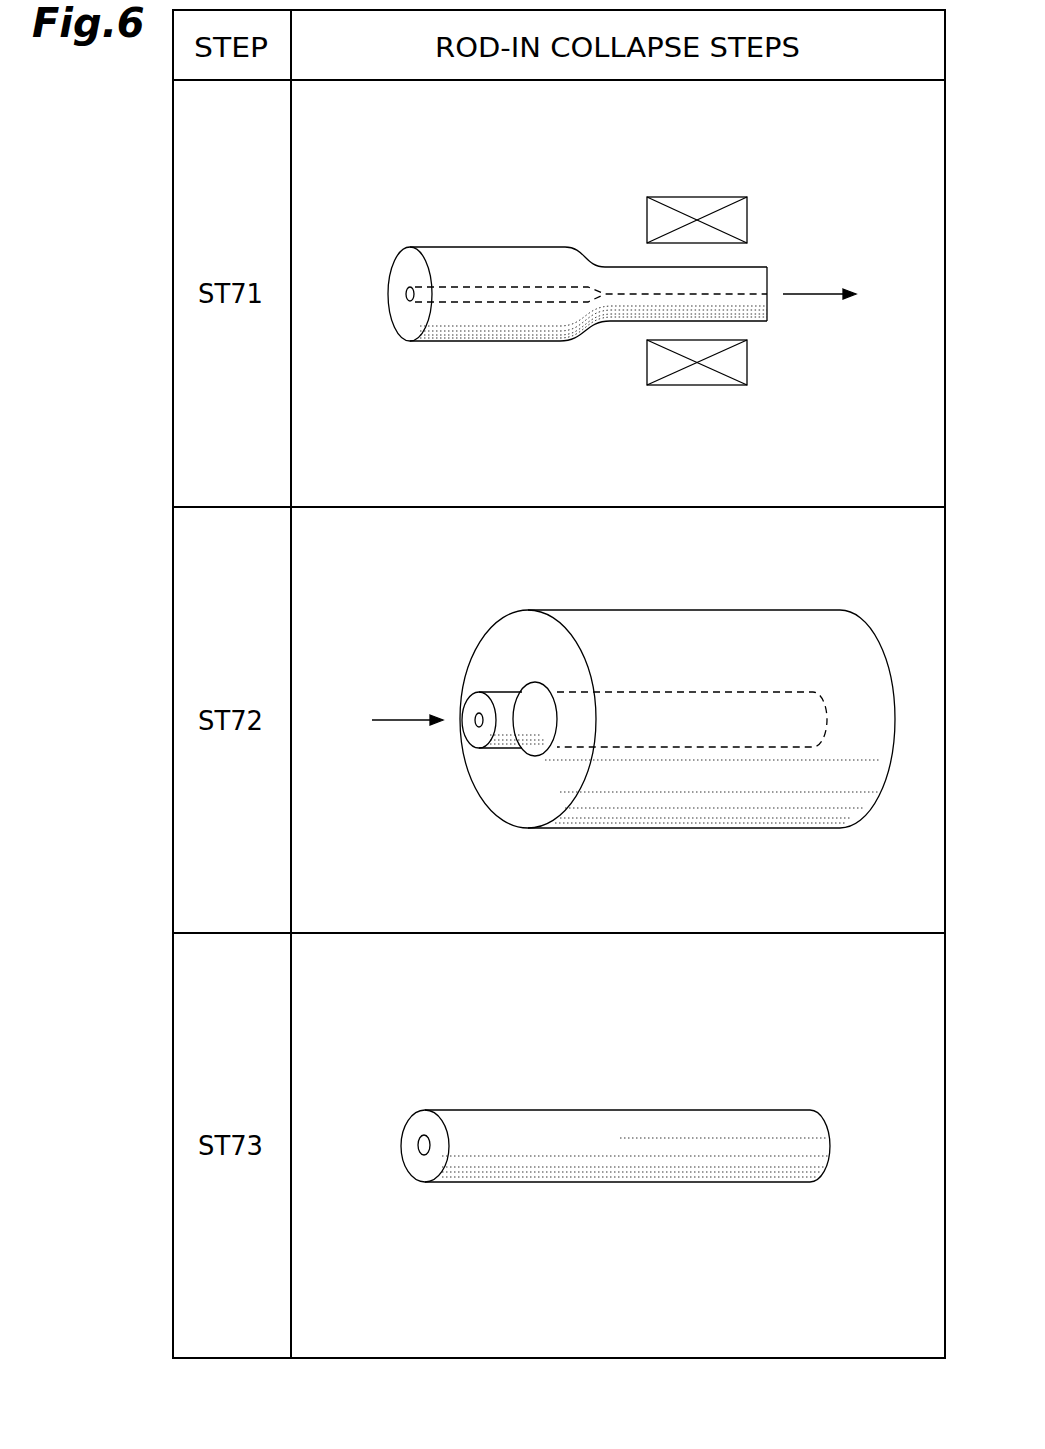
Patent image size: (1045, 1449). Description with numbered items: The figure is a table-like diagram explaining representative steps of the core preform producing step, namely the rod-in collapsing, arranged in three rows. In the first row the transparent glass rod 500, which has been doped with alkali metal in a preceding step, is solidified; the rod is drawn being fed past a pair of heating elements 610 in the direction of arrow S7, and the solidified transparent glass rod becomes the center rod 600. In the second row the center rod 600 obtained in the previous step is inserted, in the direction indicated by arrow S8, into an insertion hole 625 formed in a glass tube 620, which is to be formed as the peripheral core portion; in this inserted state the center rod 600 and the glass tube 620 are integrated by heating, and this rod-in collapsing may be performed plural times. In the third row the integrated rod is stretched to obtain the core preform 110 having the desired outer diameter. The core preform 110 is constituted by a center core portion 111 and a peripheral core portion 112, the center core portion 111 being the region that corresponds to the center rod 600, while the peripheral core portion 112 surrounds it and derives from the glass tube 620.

The transparent glass rod 500 is at (515, 247).
The center rod 600 is at (752, 266).
The heater 610 is at (706, 197).
The glass tube 620 is at (783, 628).
The insertion hole 625 is at (525, 683).
The core preform 110 is at (760, 1105).
The center core portion 111 is at (418, 1147).
The peripheral core portion 112 is at (418, 1127).
The step S7 direction S7 is at (817, 298).
The arrow S8 is at (395, 723).